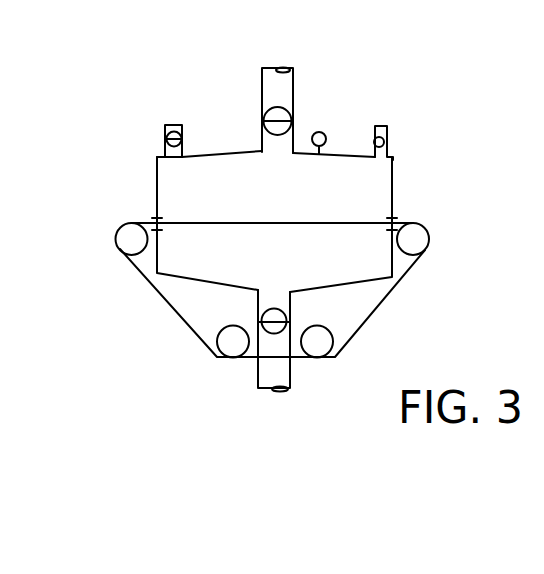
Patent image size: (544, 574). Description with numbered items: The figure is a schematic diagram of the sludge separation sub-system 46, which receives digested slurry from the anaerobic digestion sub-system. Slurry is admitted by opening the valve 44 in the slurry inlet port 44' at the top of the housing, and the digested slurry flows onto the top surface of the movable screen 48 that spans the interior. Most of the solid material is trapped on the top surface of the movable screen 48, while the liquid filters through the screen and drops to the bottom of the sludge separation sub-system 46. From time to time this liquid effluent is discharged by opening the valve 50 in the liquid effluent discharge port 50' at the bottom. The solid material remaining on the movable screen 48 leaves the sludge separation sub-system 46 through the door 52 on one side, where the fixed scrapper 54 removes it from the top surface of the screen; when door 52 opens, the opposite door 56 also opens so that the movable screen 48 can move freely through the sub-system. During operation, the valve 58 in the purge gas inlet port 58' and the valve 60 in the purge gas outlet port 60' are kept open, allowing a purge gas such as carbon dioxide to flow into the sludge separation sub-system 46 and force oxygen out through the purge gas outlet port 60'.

The valve 44 is at (303, 111).
The slurry inlet port 44' is at (316, 127).
The sludge separation sub-system 46 is at (172, 185).
The movable screen 48 is at (386, 297).
The valve 50 is at (250, 341).
The liquid effluent discharge port 50' is at (301, 313).
The door 52 is at (155, 217).
The fixed scrapper 54 is at (115, 265).
The door 56 is at (395, 220).
The valve 58 is at (146, 126).
The purge gas inlet port 58' is at (202, 136).
The valve 60 is at (410, 131).
The purge gas outlet port 60' is at (407, 142).